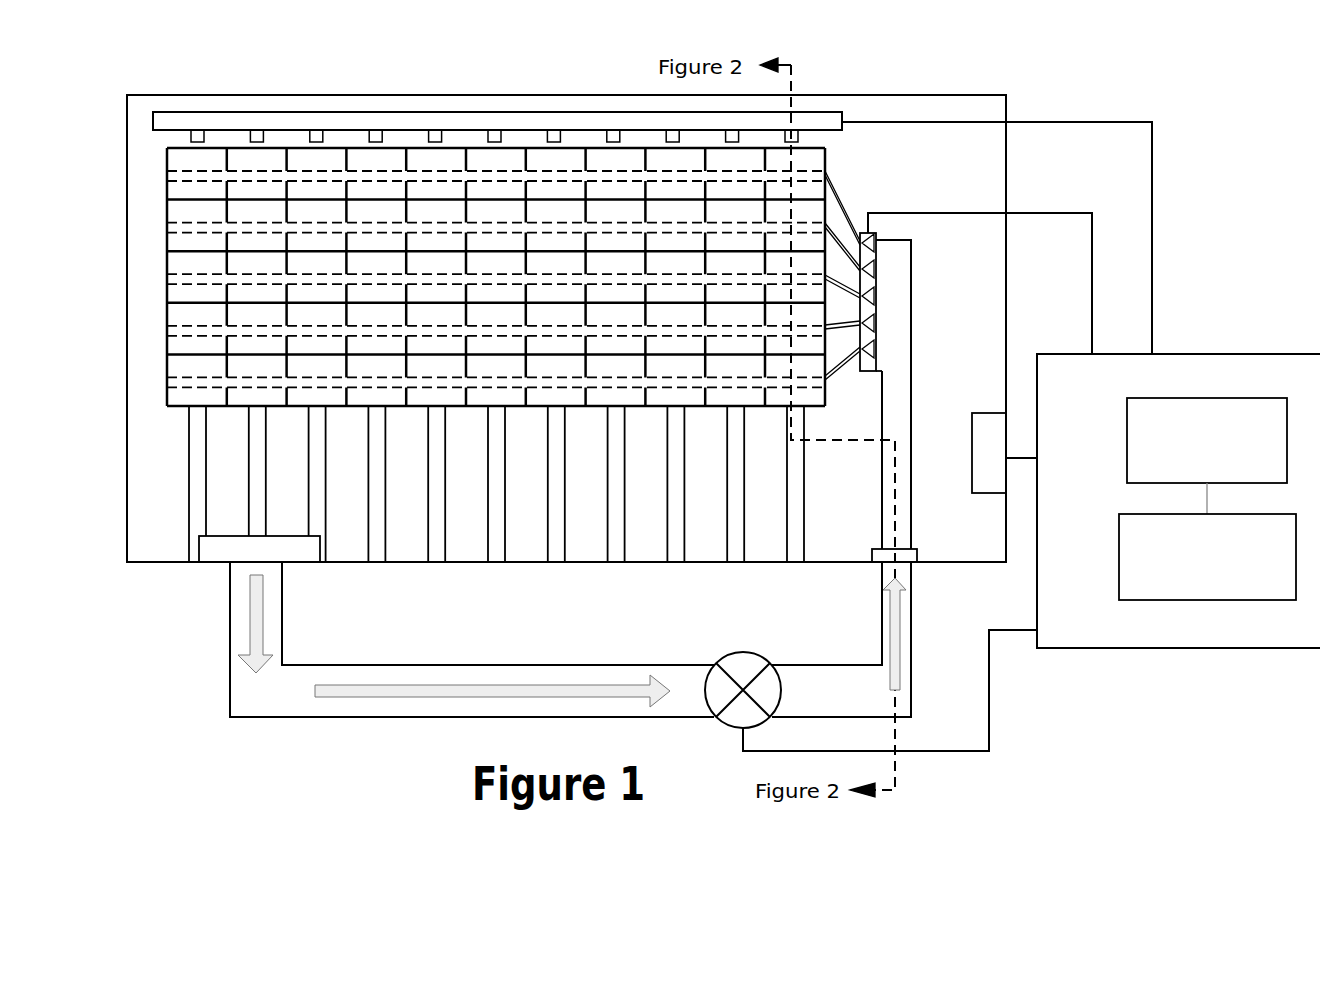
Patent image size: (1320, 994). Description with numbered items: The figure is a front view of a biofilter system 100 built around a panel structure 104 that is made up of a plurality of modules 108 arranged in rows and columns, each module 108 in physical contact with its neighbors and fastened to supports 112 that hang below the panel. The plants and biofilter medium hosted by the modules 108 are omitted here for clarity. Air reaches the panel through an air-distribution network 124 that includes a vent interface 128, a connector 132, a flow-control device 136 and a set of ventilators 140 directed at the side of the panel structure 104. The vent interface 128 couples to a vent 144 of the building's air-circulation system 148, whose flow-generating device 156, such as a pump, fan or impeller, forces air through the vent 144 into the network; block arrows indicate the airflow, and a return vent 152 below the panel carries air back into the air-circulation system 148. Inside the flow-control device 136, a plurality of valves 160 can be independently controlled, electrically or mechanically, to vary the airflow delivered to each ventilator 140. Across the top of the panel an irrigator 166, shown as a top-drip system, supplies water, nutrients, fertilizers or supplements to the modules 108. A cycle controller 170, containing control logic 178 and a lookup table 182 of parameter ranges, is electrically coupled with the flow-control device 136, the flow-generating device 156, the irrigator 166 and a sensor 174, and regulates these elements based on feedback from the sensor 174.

The biofilter system 100 is at (262, 55).
The panel structure 104 is at (163, 160).
The modules 108 is at (163, 214).
The supports 112 is at (189, 493).
The air-distribution network 124 is at (985, 302).
The vent interface 128 is at (921, 562).
The connector 132 is at (912, 490).
The flow-control device 136 is at (868, 373).
The ventilators 140 is at (815, 174).
The vent 144 is at (878, 565).
The air-circulation system 148 is at (205, 690).
The return vent 152 is at (200, 562).
The flow-generating device 156 is at (713, 663).
The valves 160 is at (878, 268).
The irrigator 166 is at (447, 100).
The cycle controller 170 is at (1178, 501).
The sensor 174 is at (1000, 413).
The control logic 178 is at (1207, 440).
The lookup table 182 is at (1207, 557).